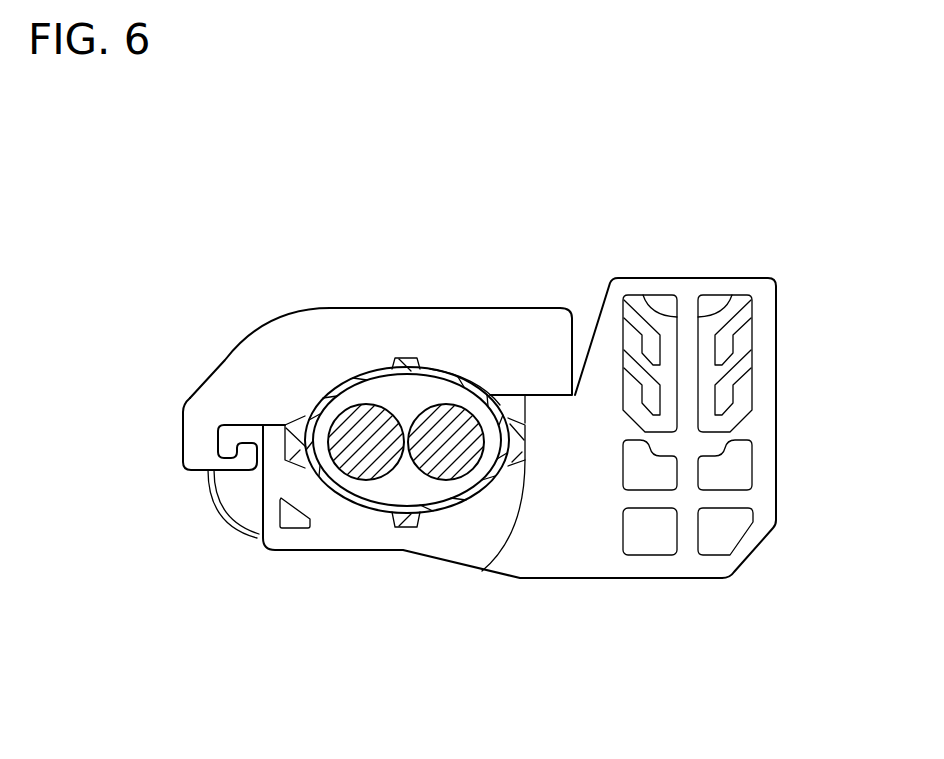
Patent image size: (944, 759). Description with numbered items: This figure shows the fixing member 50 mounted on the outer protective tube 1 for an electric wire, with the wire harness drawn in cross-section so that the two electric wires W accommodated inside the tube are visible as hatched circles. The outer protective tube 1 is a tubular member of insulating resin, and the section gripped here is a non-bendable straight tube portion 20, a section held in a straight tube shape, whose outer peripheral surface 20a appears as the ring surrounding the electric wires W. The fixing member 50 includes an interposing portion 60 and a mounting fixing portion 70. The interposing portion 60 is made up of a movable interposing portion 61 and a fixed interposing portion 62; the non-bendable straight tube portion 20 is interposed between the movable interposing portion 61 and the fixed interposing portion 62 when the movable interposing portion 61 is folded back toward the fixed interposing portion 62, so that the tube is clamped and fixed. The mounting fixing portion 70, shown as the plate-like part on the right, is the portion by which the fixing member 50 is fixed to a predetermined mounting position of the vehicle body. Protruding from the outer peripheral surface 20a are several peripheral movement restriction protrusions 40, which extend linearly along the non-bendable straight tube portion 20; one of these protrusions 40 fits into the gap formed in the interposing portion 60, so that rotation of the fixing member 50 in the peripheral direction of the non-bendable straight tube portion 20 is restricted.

The outer protective tube for an electric wire 1 is at (341, 293).
The non-bendable straight tube portion 20 is at (387, 384).
The outer peripheral surface 20a is at (453, 378).
The peripheral movement restriction protrusion 40 is at (403, 362).
The fixing member 50 is at (679, 382).
The interposing portion 60 is at (381, 324).
The movable interposing portion 61 is at (234, 411).
The fixed interposing portion 62 is at (492, 526).
The mounting fixing portion 70 is at (826, 400).
The electric wire W is at (410, 472).